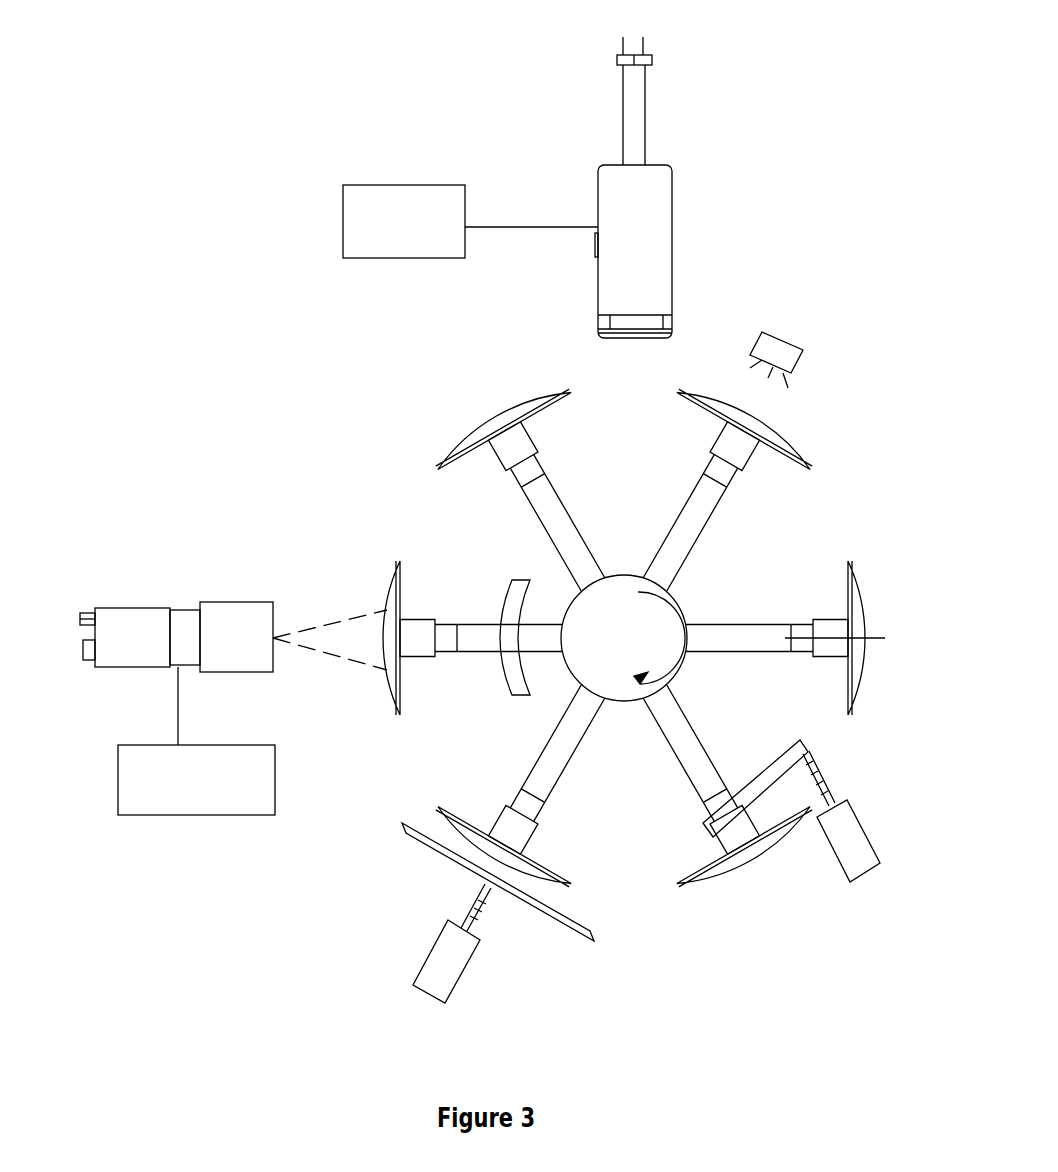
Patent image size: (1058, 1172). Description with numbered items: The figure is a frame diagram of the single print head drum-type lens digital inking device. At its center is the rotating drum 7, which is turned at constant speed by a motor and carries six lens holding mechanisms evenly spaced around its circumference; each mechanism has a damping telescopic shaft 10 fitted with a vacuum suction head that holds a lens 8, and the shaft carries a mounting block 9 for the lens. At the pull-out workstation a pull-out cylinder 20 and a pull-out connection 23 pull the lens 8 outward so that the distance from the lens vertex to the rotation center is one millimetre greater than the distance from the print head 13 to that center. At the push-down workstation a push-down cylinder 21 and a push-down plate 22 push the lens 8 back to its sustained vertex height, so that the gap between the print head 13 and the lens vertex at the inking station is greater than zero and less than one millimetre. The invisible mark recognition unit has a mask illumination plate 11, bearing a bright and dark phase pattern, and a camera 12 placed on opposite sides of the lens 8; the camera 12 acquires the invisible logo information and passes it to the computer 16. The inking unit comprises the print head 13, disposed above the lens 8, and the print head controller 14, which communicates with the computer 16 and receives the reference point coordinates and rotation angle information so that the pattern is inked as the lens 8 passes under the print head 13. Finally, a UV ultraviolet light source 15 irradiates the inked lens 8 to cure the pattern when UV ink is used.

The rotating drum 7 is at (624, 638).
The lens 8 is at (505, 420).
The mirror mounting block 9 is at (828, 622).
The damping telescopic shaft 10 is at (698, 773).
The mask illumination plate 11 is at (512, 597).
The camera 12 is at (237, 632).
The print head 13 is at (642, 255).
The print head controller 14 is at (417, 233).
The UV ultraviolet light source 15 is at (792, 337).
The computer 16 is at (235, 795).
The pull-out cylinder 20 is at (848, 847).
The push-down cylinder 21 is at (448, 928).
The push-down plate 22 is at (573, 923).
The pull-out connection 23 is at (792, 758).